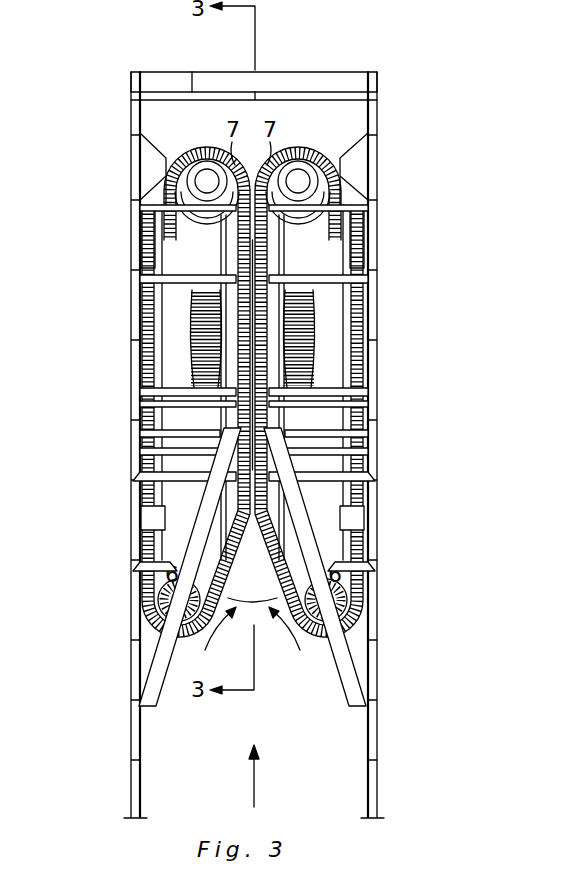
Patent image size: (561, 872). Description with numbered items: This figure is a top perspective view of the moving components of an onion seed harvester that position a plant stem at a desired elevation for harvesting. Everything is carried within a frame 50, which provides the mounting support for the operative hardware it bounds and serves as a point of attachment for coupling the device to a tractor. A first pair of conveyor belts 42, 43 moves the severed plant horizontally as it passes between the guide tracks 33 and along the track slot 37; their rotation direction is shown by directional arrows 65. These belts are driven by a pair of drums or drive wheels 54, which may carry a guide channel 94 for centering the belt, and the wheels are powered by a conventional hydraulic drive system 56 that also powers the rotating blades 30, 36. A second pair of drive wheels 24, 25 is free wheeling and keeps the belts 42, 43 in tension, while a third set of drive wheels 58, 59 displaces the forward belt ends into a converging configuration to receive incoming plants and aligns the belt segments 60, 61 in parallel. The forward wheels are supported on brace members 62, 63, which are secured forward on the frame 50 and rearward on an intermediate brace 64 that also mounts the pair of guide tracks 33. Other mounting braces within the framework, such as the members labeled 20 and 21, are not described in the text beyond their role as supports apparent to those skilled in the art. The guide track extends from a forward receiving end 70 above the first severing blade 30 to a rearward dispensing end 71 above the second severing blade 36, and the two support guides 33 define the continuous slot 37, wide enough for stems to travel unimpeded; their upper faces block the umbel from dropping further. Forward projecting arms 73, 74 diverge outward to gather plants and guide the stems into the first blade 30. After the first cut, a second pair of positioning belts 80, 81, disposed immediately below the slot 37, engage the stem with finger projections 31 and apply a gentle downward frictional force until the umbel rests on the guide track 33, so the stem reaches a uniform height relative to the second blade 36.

The frame 50 is at (377, 106).
The hydraulic drive system 56 is at (140, 166).
The guide channel 94 is at (377, 210).
The drive wheels 54 is at (140, 236).
The second severing blade 36 is at (377, 280).
The track slot 37 is at (377, 300).
The positioning belt 80 is at (320, 338).
The positioning belt 81 is at (184, 314).
The guide tracks 33 is at (140, 352).
The forward receiving end 70 is at (377, 372).
The belt segment 60 is at (377, 430).
The first severing blade 30 is at (377, 462).
The forward drive wheel 58 is at (377, 495).
The conveyor belt 42 is at (377, 522).
The lower support 20 is at (377, 552).
The drive wheel 24 is at (377, 592).
The brace member 62 is at (362, 660).
The forward projecting arm 73 is at (377, 781).
The forward projecting arm 74 is at (131, 780).
The strut 21 is at (150, 688).
The brace member 63 is at (140, 612).
The drive wheel 25 is at (140, 567).
The conveyor belt 43 is at (140, 518).
The forward drive wheel 59 is at (140, 487).
The intermediate brace 64 is at (140, 460).
The belt segment 61 is at (140, 428).
The finger projections 31 is at (140, 388).
The rearward dispensing end 71 is at (140, 278).
The directional arrows 65 is at (283, 640).